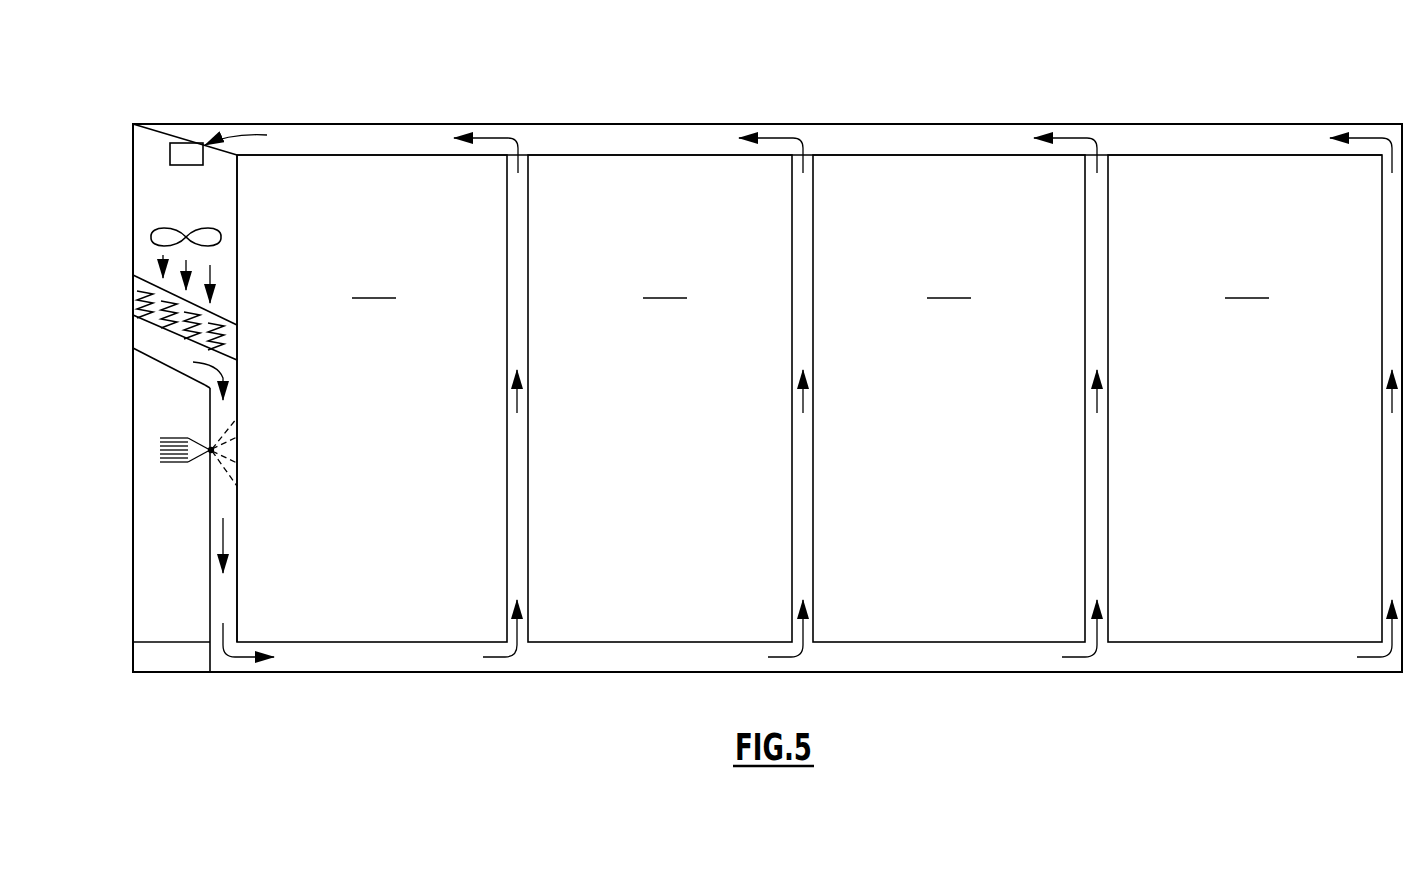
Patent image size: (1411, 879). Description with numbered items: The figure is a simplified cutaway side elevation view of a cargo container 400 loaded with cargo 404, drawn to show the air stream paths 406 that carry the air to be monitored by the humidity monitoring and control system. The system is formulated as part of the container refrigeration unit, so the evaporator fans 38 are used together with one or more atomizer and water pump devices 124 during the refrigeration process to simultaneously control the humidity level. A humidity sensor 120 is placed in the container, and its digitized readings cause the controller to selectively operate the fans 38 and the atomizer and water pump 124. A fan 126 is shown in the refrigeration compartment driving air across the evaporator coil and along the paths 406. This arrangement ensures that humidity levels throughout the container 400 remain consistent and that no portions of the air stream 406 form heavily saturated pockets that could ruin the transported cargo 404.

The cargo container 400 is at (978, 92).
The air stream paths 406 is at (620, 135).
The cargo 404 is at (807, 406).
The humidity sensor 120 is at (170, 152).
The evaporator fan 126 is at (160, 234).
The evaporator fans 38 is at (150, 328).
The water atomizer and water pump 124 is at (168, 462).